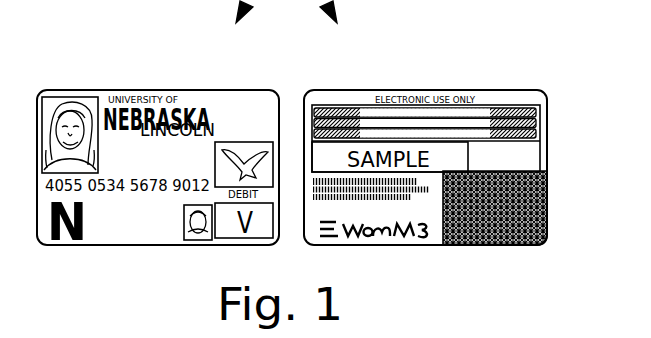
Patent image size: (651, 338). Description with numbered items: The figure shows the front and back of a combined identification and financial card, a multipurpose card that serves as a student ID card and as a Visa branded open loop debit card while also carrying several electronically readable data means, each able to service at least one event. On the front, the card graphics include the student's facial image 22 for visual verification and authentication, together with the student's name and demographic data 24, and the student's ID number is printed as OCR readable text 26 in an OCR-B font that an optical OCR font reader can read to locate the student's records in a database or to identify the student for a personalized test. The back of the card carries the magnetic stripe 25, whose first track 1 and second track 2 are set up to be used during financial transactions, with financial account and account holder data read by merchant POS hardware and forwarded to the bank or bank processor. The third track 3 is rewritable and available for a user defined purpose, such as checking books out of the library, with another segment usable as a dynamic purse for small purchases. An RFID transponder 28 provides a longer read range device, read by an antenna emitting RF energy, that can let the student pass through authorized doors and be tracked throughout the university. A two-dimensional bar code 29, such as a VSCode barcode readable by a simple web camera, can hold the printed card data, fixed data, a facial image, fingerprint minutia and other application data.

The first magnetic stripe track 1 is at (330, 112).
The second magnetic stripe track 2 is at (493, 122).
The third magnetic stripe track 3 is at (533, 131).
The facial image 22 is at (88, 98).
The name and demographic data 24 is at (195, 147).
The magnetic stripe 25 is at (538, 112).
The OCR readable text 26 is at (118, 236).
The RFID transponder 28 is at (412, 247).
The two-dimensional bar code 29 is at (513, 247).